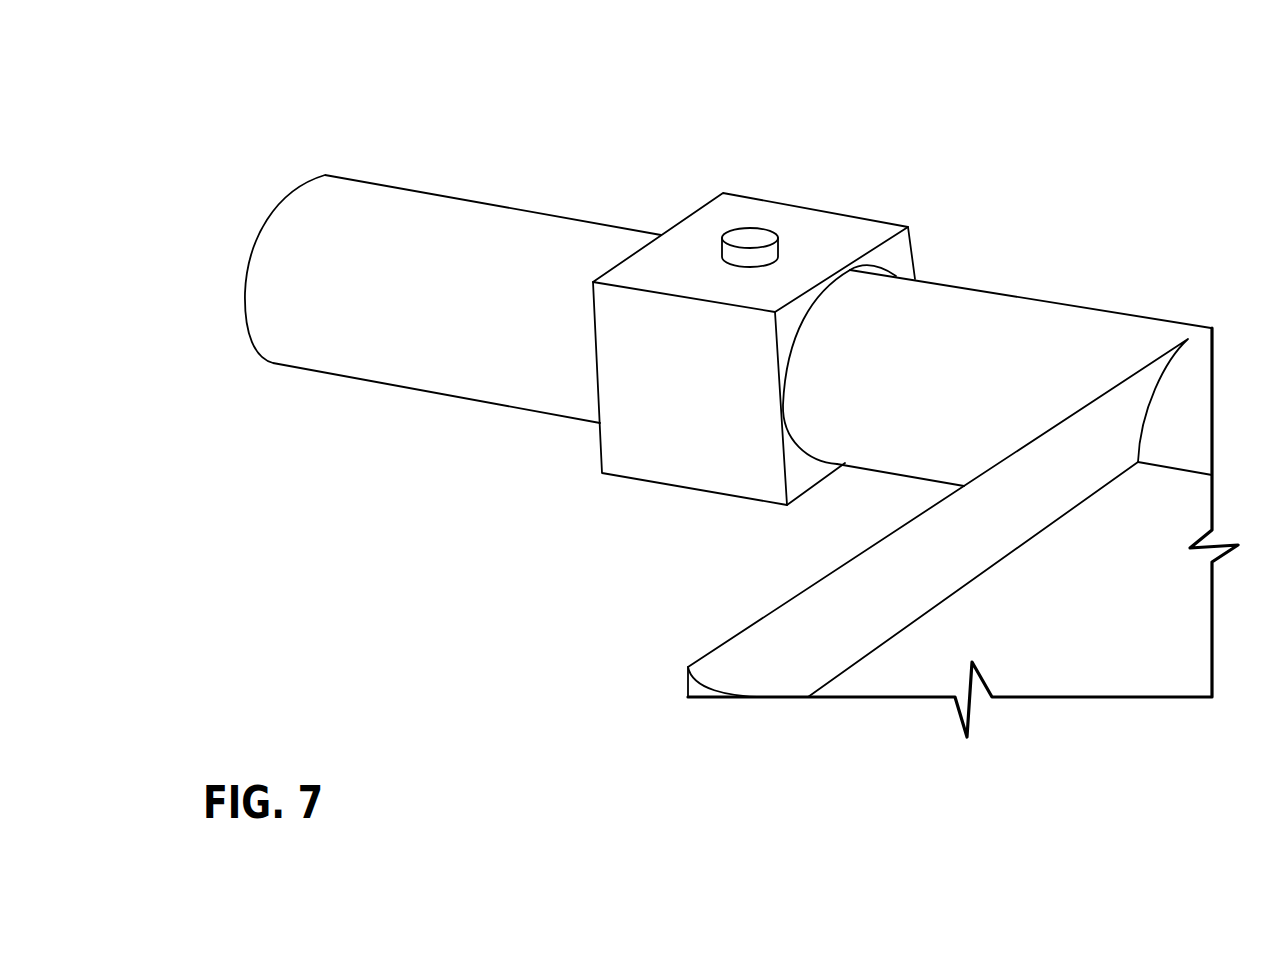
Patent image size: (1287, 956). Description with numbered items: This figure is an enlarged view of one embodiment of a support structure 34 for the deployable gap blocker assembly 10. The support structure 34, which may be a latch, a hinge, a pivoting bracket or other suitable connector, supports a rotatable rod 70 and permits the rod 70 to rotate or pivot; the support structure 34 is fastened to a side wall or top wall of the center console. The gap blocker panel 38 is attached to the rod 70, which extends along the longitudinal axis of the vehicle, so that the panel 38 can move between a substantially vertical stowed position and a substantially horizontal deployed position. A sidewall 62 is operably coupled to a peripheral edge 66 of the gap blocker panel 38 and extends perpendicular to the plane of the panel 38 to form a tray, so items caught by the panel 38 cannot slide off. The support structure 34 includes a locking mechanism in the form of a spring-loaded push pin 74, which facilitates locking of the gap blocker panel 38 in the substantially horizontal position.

The deployable gap blocker assembly 10 is at (420, 155).
The support structure 34 is at (827, 237).
The spring-loaded push pin 74 is at (755, 236).
The rotatable rod 70 is at (978, 308).
The sidewall 62 is at (807, 623).
The peripheral edge 66 is at (1043, 532).
The gap blocker panel 38 is at (1072, 658).